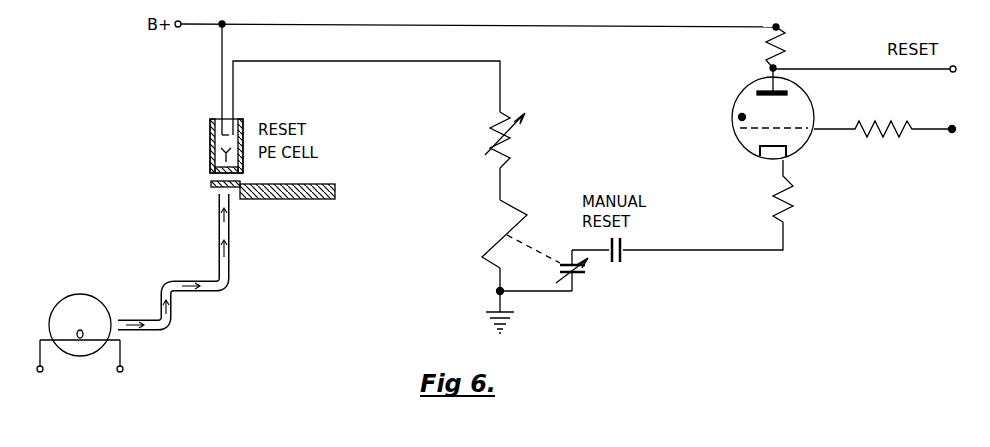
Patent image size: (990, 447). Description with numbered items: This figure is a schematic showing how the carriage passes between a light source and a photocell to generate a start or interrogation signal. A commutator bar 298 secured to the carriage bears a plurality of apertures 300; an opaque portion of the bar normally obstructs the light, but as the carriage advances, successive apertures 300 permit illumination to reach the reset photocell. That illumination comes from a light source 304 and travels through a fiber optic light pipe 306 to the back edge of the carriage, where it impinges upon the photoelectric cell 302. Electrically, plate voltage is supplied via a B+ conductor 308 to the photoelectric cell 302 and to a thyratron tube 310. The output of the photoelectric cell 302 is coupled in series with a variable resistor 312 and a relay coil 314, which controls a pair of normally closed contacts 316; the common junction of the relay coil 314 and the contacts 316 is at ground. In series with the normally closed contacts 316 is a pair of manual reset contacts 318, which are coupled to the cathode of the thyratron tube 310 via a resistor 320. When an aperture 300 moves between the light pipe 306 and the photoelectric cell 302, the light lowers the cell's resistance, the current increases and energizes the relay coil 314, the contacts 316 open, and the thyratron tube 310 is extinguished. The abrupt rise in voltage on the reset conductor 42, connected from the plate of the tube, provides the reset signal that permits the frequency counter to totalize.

The B+ conductor 308 is at (322, 25).
The photoelectric cell 302 is at (211, 137).
The apertures 300 is at (212, 184).
The commutator bar 298 is at (303, 200).
The light source 304 is at (82, 295).
The light pipe 306 is at (232, 282).
The variable resistor 312 is at (511, 146).
The relay coil 314 is at (495, 233).
The normally closed contacts 316 is at (576, 280).
The manual reset contacts 318 is at (622, 260).
The thyratron tube 310 is at (731, 108).
The reset conductor 42 is at (806, 68).
The resistor 320 is at (793, 198).